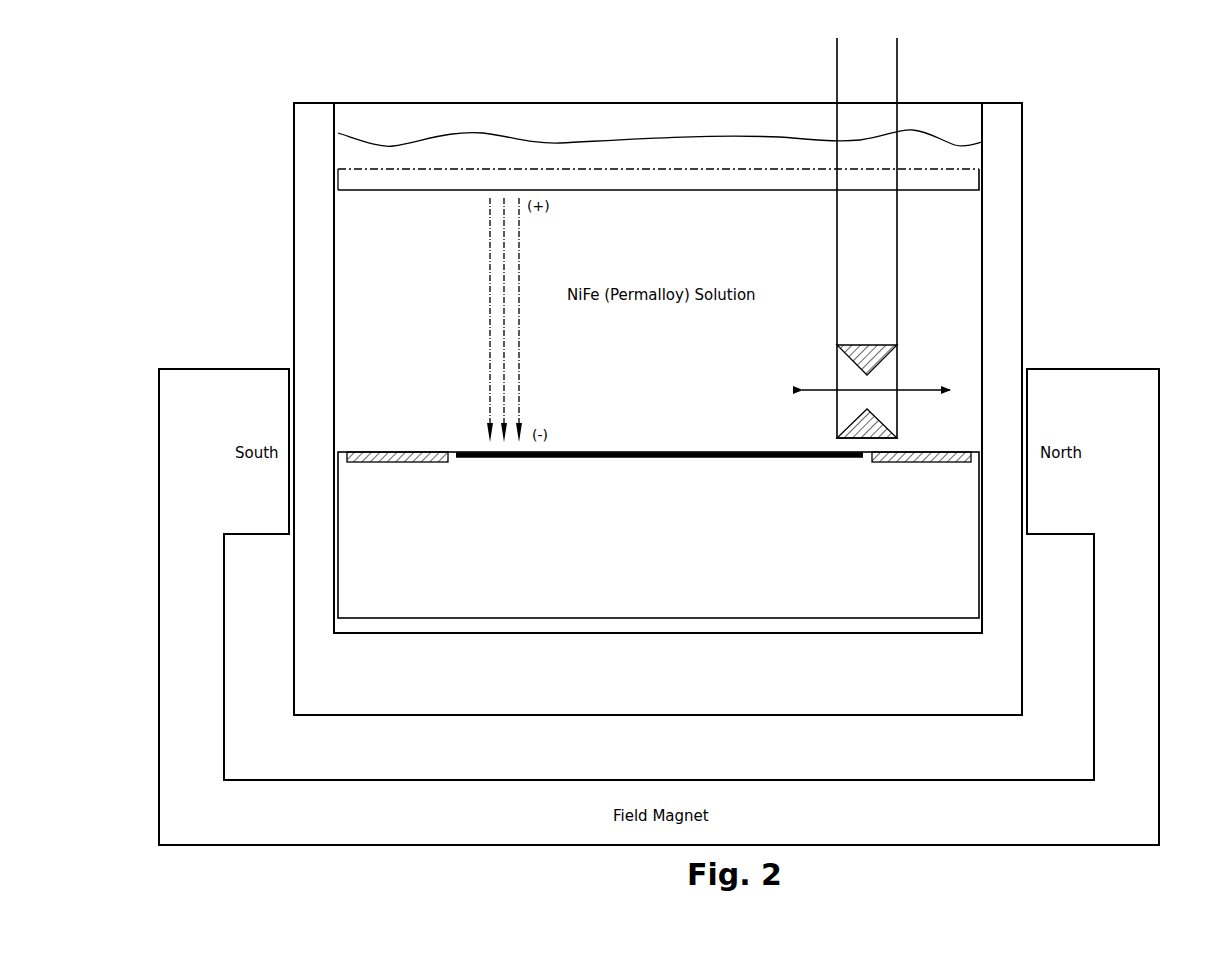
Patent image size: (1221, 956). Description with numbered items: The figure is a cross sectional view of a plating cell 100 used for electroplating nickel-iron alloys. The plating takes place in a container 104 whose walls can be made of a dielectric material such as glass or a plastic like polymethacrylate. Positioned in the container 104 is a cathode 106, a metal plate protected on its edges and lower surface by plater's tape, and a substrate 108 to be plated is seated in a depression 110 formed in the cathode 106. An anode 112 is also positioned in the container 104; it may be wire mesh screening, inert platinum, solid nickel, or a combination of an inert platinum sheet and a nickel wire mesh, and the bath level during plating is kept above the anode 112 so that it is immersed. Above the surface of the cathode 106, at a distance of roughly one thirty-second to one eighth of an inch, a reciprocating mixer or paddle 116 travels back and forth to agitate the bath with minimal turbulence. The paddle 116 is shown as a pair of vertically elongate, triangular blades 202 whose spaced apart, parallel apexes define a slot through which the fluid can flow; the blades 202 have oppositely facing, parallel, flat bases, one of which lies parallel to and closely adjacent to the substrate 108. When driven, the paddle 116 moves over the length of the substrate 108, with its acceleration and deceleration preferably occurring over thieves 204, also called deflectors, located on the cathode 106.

The plating cell 100 is at (265, 118).
The container 104 is at (294, 218).
The cathode 106 is at (337, 510).
The substrate 108 is at (472, 452).
The depression 110 is at (750, 464).
The anode 112 is at (538, 165).
The paddle 116 is at (1003, 238).
The blades 202 is at (880, 367).
The thieves 204 is at (945, 452).